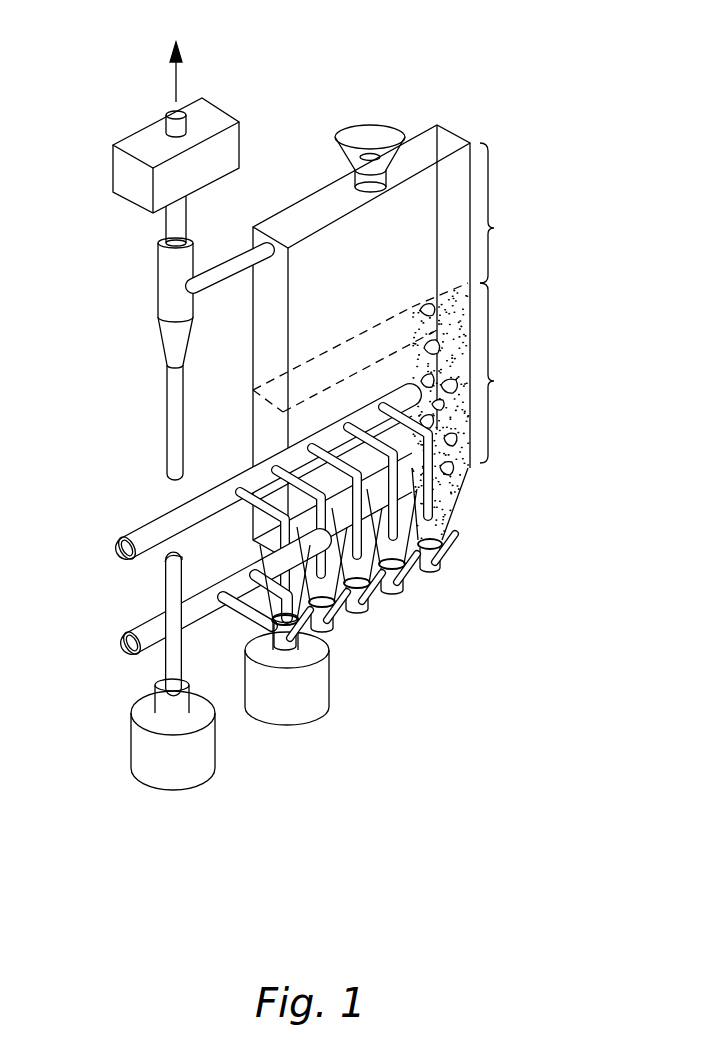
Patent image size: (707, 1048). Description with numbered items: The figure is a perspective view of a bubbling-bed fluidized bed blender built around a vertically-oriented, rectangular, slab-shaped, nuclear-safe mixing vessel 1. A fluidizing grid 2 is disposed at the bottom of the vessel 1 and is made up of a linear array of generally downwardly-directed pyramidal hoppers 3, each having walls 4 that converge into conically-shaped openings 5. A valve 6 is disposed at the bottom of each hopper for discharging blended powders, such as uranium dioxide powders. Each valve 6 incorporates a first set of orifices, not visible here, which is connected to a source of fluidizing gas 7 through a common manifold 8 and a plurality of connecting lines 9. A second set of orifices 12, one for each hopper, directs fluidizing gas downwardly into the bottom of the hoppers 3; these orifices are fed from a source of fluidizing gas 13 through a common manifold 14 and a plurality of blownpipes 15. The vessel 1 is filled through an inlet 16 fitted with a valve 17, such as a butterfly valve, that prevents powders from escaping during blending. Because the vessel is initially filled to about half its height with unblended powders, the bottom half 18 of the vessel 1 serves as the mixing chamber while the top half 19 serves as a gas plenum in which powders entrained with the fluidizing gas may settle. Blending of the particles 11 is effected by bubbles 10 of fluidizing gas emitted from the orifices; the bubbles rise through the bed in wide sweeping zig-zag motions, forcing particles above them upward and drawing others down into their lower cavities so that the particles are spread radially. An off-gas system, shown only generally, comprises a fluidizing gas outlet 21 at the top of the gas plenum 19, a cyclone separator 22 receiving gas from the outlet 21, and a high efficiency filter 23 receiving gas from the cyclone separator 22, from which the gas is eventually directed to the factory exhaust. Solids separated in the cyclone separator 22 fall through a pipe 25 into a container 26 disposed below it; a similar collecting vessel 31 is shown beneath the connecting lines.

The mixing vessel 1 is at (253, 327).
The fluidizing grid 2 is at (458, 473).
The hoppers 3 is at (462, 505).
The walls 4 is at (462, 486).
The conically-shaped openings 5 is at (352, 600).
The valves 6 is at (410, 586).
The source of fluidizing gas 7 is at (118, 654).
The common manifold 8 is at (148, 628).
The connecting lines 9 is at (250, 612).
The bubbles 10 is at (426, 302).
The particles 11 is at (422, 333).
The second set of orifices 12 is at (253, 582).
The source of fluidizing gas 13 is at (118, 554).
The common manifold 14 is at (140, 530).
The blownpipes 15 is at (264, 478).
The inlet 16 is at (369, 122).
The valve 17 is at (387, 176).
The bottom half 18 is at (507, 373).
The top half 19 is at (505, 213).
The fluidizing gas outlet 21 is at (226, 262).
The cyclone separator 22 is at (158, 283).
The high efficiency filter 23 is at (239, 148).
The pipe 25 is at (167, 408).
The container 26 is at (132, 745).
The collecting vessel 31 is at (329, 692).